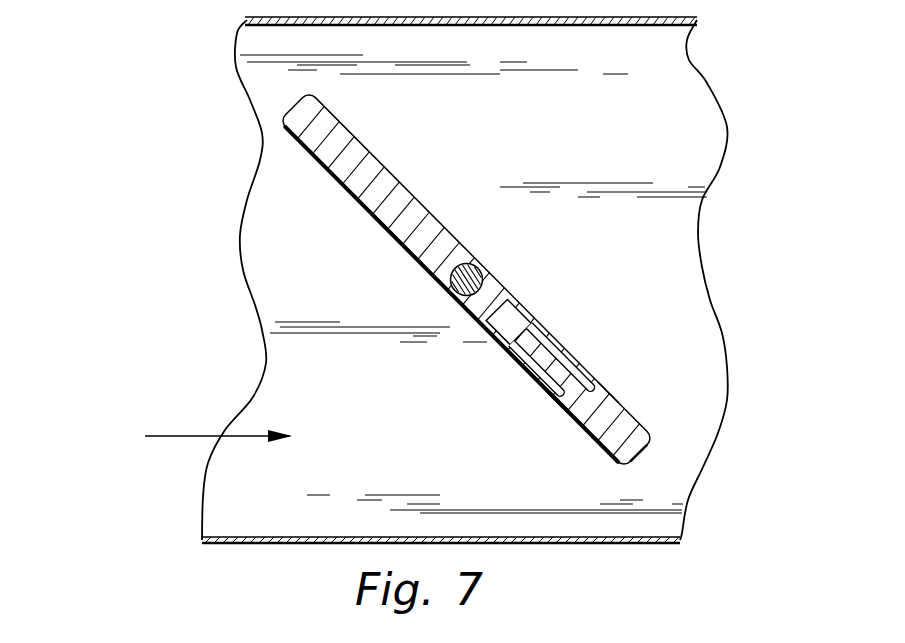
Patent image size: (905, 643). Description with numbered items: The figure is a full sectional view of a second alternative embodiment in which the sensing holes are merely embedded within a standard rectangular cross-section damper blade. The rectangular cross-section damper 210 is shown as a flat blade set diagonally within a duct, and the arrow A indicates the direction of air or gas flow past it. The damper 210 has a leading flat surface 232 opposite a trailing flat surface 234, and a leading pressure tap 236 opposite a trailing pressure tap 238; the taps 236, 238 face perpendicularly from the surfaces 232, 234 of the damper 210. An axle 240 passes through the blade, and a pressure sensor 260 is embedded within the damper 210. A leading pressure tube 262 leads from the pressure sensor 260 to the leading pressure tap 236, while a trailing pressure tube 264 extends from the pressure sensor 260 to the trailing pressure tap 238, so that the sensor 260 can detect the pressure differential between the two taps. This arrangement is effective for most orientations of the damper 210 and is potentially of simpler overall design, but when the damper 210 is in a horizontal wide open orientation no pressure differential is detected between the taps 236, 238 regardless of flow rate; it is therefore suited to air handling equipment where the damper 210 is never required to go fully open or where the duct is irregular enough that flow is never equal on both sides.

The rectangular cross-section damper 210 is at (192, 81).
The leading flat surface 232 is at (351, 191).
The trailing flat surface 234 is at (447, 183).
The leading pressure tap 236 is at (562, 402).
The trailing pressure tap 238 is at (603, 386).
The axle 240 is at (474, 265).
The pressure sensor 260 is at (505, 320).
The leading pressure tube 262 is at (536, 368).
The trailing pressure tube 264 is at (560, 358).
The flow direction A is at (200, 436).